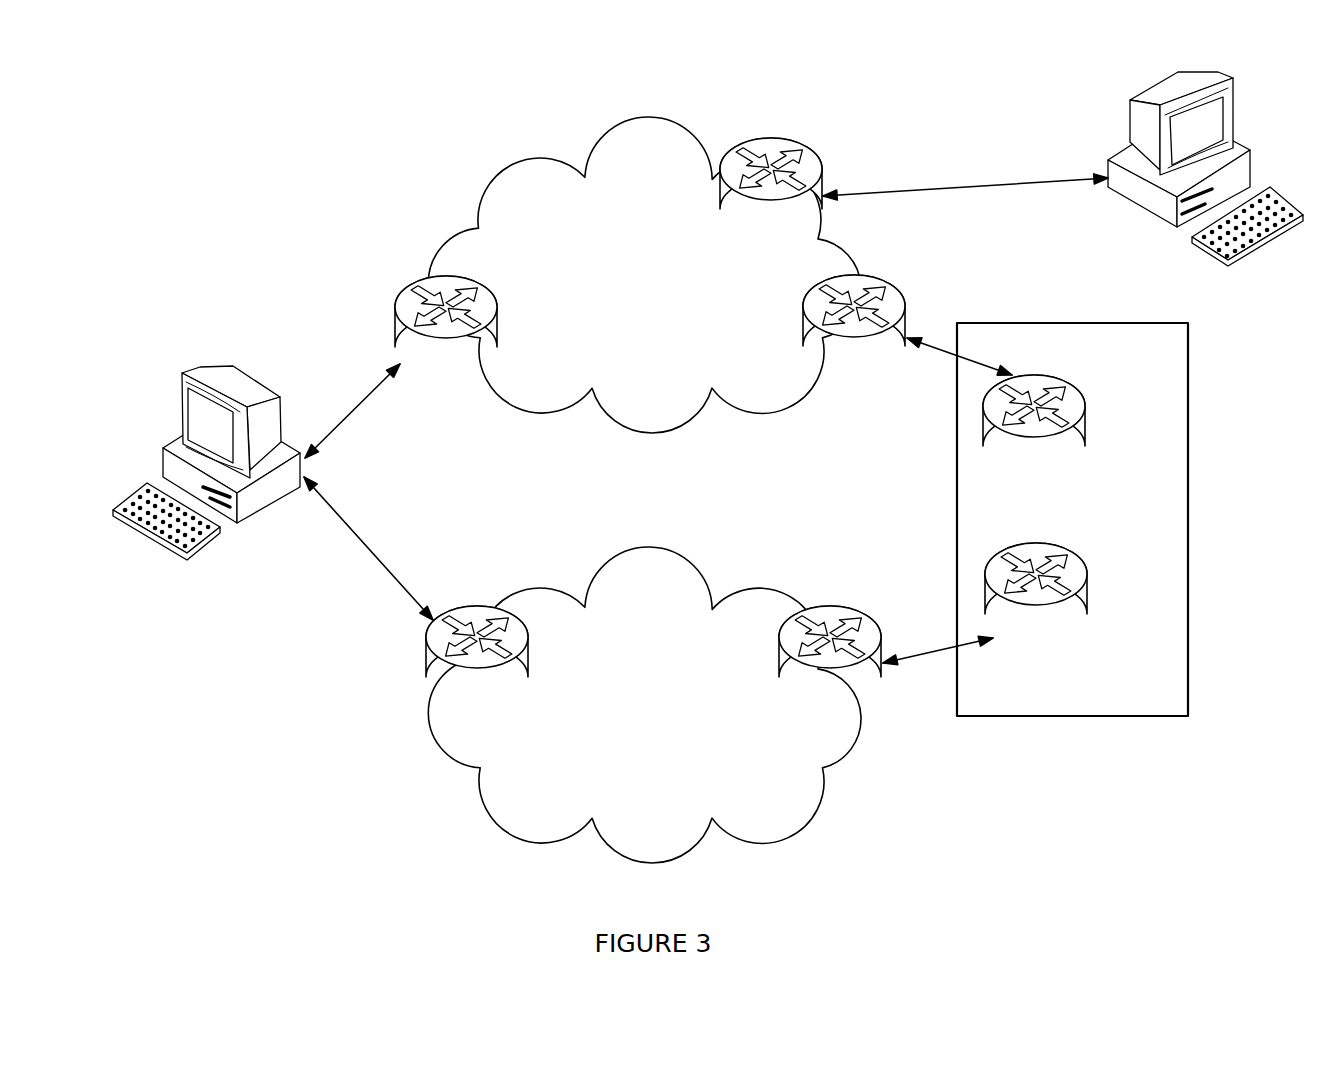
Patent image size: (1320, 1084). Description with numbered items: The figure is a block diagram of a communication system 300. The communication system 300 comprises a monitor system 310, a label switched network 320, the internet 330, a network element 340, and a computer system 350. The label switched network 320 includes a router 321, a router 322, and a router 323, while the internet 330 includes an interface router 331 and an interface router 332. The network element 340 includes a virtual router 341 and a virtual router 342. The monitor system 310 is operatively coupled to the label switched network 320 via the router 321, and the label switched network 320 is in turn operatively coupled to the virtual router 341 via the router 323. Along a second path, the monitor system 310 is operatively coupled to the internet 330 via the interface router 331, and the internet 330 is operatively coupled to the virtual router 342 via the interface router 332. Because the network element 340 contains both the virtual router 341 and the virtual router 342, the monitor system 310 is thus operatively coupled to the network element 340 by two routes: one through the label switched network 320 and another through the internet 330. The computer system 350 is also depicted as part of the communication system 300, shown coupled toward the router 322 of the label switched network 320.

The communication system 300 is at (205, 97).
The monitor system 310 is at (195, 369).
The label switched network 320 is at (628, 338).
The router 321 is at (422, 278).
The router 322 is at (765, 137).
The router 323 is at (893, 286).
The internet 330 is at (673, 753).
The interface router 331 is at (437, 612).
The interface router 332 is at (823, 608).
The network element 340 is at (1093, 696).
The virtual router 341 is at (990, 402).
The virtual router 342 is at (987, 574).
The computer system 350 is at (1145, 93).